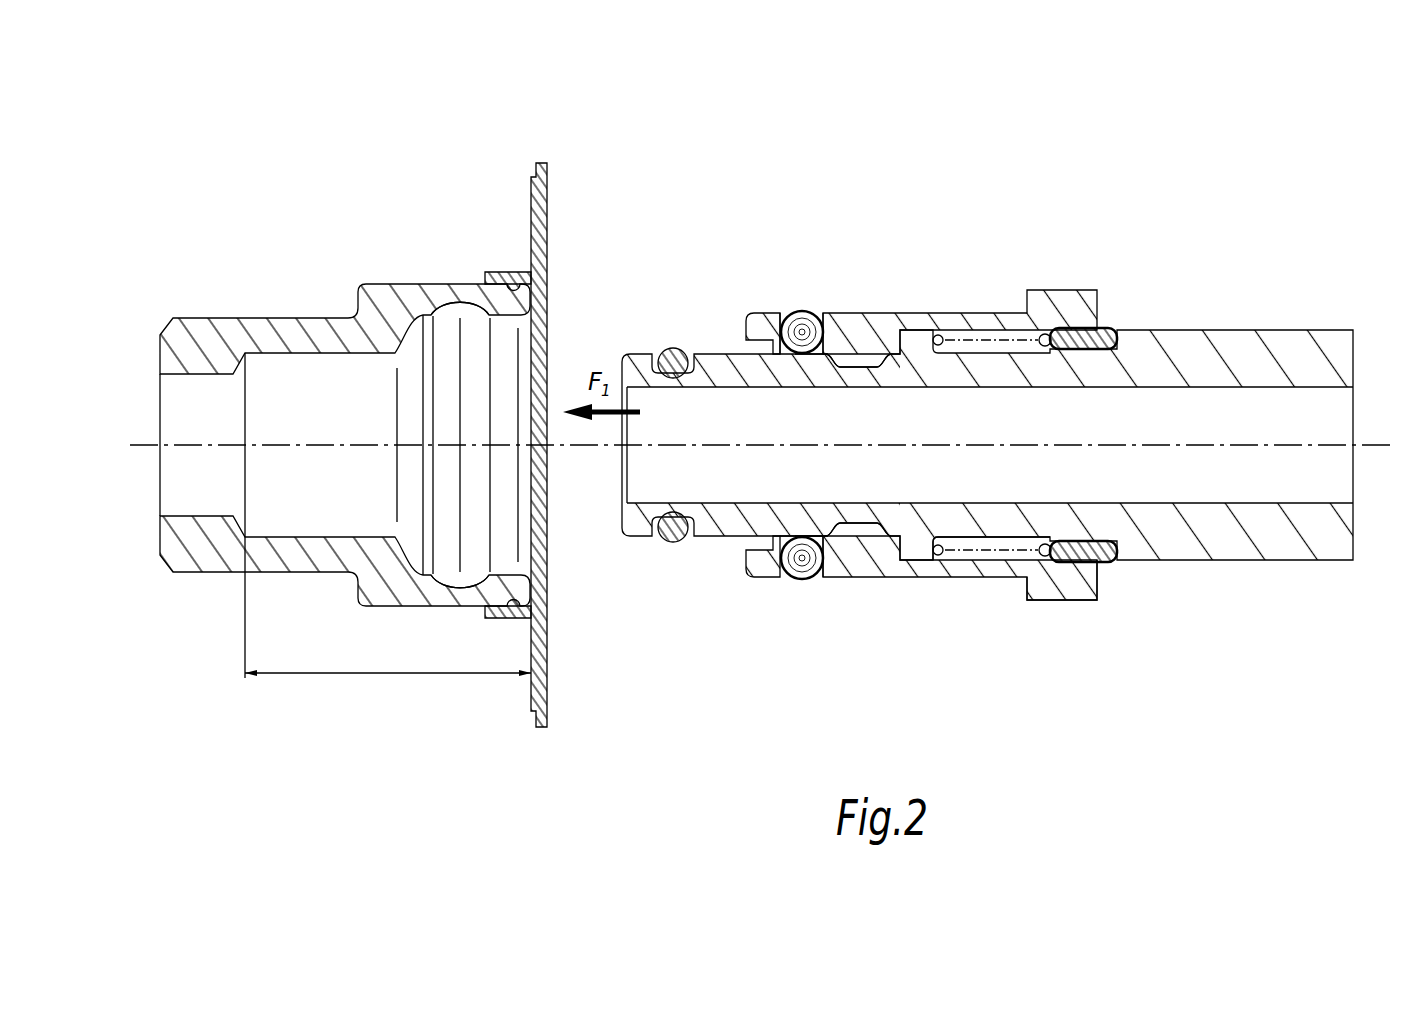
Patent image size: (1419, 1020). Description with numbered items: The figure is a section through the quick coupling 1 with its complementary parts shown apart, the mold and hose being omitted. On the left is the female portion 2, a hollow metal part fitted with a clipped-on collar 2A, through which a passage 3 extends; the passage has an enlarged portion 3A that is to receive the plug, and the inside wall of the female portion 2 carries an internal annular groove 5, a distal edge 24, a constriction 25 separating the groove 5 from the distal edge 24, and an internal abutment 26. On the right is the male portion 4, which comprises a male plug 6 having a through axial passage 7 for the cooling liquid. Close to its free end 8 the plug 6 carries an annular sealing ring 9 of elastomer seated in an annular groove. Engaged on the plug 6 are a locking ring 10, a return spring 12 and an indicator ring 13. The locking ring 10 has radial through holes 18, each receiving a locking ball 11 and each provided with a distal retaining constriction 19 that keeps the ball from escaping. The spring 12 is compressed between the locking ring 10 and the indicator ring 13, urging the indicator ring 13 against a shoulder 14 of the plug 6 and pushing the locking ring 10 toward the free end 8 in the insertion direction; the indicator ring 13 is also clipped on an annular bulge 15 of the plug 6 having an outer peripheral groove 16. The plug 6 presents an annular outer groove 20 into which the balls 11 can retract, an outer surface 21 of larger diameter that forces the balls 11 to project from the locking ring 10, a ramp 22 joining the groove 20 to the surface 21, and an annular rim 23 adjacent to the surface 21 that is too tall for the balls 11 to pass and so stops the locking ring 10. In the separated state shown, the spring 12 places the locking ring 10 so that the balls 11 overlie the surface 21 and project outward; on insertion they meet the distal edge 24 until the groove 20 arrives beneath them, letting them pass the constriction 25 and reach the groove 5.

The quick coupling 1 is at (484, 47).
The female portion 2 is at (436, 288).
The clipped-on collar 2A is at (547, 695).
The passage 3 is at (171, 472).
The enlarged portion of the passage 3A is at (388, 528).
The male portion 4 is at (650, 304).
The internal annular groove 5 is at (476, 562).
The male plug 6 is at (713, 360).
The through axial passage 7 is at (1330, 405).
The free end 8 is at (600, 478).
The annular sealing ring 9 is at (672, 347).
The locking ring 10 is at (1045, 300).
The locking balls 11 is at (790, 310).
The return spring 12 is at (958, 565).
The indicator ring 13 is at (1107, 330).
The shoulder 14 is at (1093, 539).
The annular bulge 15 is at (1030, 545).
The outer peripheral groove 16 is at (1100, 577).
The radial through holes 18 is at (803, 360).
The distal retaining constriction 19 is at (823, 317).
The annular outer groove 20 is at (863, 353).
The outer surface 21 is at (808, 535).
The ramp 22 is at (840, 540).
The annular rim 23 is at (781, 355).
The distal edge 24 is at (535, 593).
The constriction 25 is at (503, 583).
The internal abutment 26 is at (416, 338).